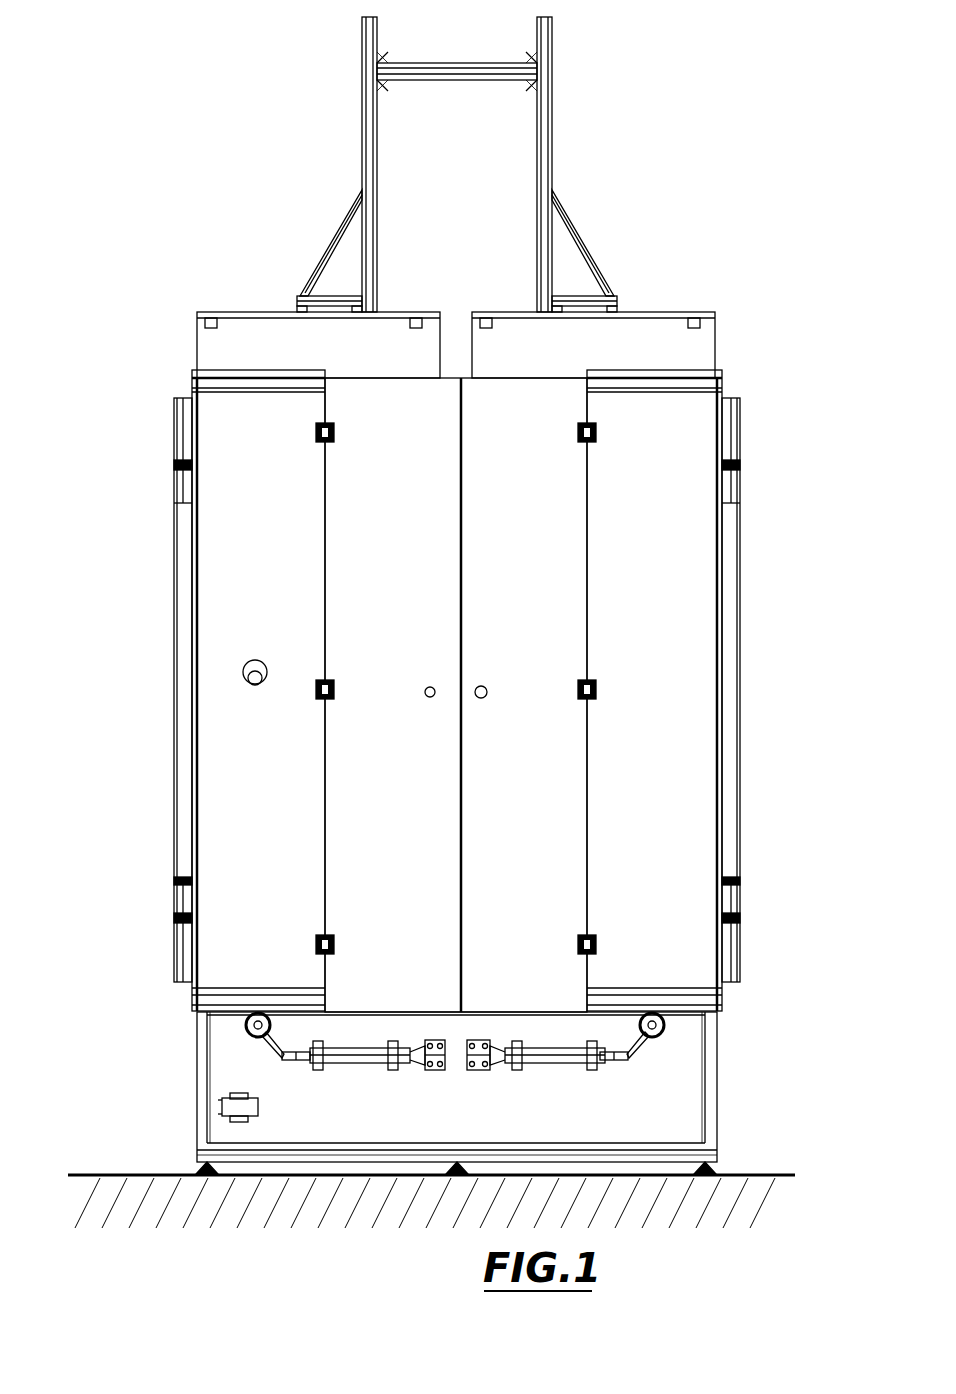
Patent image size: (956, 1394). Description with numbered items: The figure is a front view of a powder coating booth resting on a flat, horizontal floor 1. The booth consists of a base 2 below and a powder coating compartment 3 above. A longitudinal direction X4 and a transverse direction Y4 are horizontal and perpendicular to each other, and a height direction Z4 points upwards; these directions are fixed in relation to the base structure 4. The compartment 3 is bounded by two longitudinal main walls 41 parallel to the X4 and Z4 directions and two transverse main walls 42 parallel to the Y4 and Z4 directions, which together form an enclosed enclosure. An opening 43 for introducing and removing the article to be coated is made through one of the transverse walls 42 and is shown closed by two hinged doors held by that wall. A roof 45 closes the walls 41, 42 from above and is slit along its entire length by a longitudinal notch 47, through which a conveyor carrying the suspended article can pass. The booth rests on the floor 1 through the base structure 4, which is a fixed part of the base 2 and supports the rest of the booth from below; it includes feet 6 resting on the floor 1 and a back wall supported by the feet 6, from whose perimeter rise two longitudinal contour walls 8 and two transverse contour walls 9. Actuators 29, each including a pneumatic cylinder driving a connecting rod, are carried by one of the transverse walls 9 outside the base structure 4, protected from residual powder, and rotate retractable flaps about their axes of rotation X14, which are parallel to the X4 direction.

The floor 1 is at (93, 1166).
The base 2 is at (473, 1150).
The powder coating compartment 3 is at (226, 543).
The base structure 4 is at (705, 1160).
The feet 6 is at (207, 1178).
The longitudinal contour walls 8 is at (205, 1100).
The transverse contour walls 9 is at (300, 1122).
The actuators 29 is at (358, 1046).
The longitudinal main walls 41 is at (176, 600).
The transverse main walls 42 is at (688, 487).
The opening 43 is at (525, 593).
The roof 45 is at (647, 345).
The longitudinal notch 47 is at (456, 327).
The axis of rotation X14 is at (258, 1013).
The height direction Z4 is at (456, 1093).
The transverse direction Y4 is at (456, 1093).
The longitudinal direction X4 is at (463, 1086).